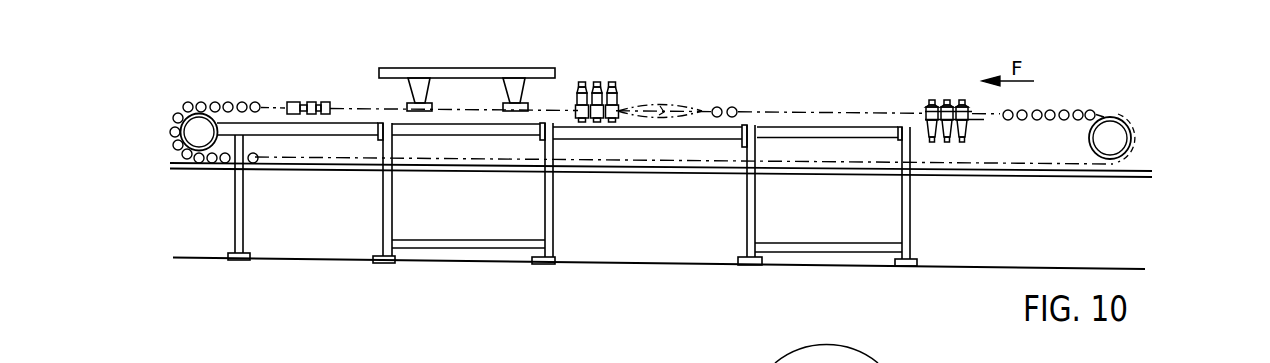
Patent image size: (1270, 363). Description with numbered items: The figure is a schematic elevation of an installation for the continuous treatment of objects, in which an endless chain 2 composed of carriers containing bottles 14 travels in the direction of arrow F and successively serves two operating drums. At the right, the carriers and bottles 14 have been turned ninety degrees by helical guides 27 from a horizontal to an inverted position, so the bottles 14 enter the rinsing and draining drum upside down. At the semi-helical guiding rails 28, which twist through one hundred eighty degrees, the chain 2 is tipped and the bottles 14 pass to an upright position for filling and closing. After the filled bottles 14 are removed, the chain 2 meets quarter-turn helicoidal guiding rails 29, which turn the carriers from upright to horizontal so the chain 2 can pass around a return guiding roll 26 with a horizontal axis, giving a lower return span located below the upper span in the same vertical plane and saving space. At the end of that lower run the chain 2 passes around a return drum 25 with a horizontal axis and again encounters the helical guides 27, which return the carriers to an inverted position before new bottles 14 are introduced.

The endless chain 2 is at (236, 93).
The bottles 14 is at (612, 82).
The return drum 25 is at (1118, 137).
The return guiding roll 26 is at (192, 132).
The helical guides 27 is at (984, 120).
The semi-helical guiding rails 28 is at (683, 102).
The quarter-turn helicoidal guiding rails 29 is at (275, 108).